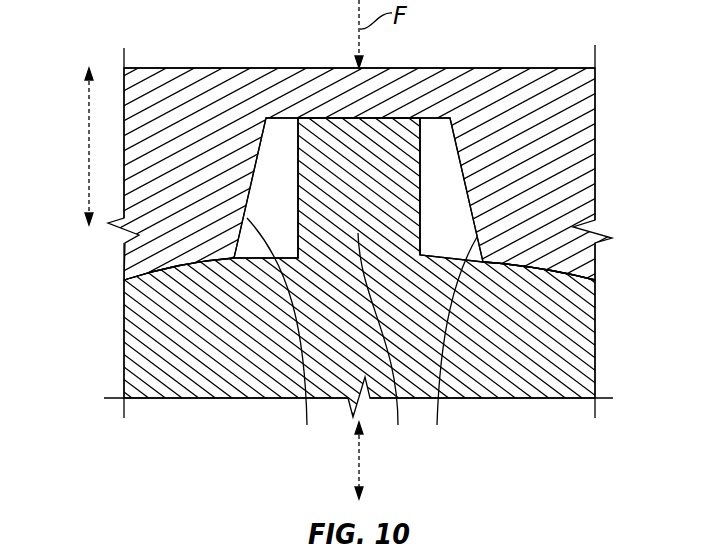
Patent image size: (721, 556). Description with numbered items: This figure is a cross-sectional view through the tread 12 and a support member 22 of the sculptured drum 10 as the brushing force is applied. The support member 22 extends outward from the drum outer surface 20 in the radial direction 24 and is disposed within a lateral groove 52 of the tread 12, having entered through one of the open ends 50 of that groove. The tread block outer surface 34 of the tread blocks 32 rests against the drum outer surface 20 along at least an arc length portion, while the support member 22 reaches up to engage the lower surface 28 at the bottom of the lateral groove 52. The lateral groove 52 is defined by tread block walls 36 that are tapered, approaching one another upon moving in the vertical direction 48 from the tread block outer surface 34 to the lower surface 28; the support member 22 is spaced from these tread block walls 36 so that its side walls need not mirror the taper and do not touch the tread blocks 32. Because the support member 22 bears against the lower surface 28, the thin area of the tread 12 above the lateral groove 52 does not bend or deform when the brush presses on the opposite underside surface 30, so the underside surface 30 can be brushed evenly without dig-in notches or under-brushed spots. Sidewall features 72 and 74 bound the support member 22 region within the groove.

The sculptured drum 10 is at (577, 345).
The tread 12 is at (575, 92).
The drum outer surface 20 is at (543, 265).
The support member 22 is at (384, 345).
The radial direction 24 is at (358, 458).
The lower surface 28 is at (290, 119).
The underside surface 30 is at (491, 68).
The tread blocks 32 is at (575, 132).
The tread block outer surface 34 is at (560, 277).
The tread block walls 36 is at (466, 186).
The vertical direction 48 is at (88, 150).
The ends 50 is at (257, 238).
The lateral groove 52 is at (451, 169).
The sidewall 72 is at (284, 338).
The sidewall 74 is at (452, 347).